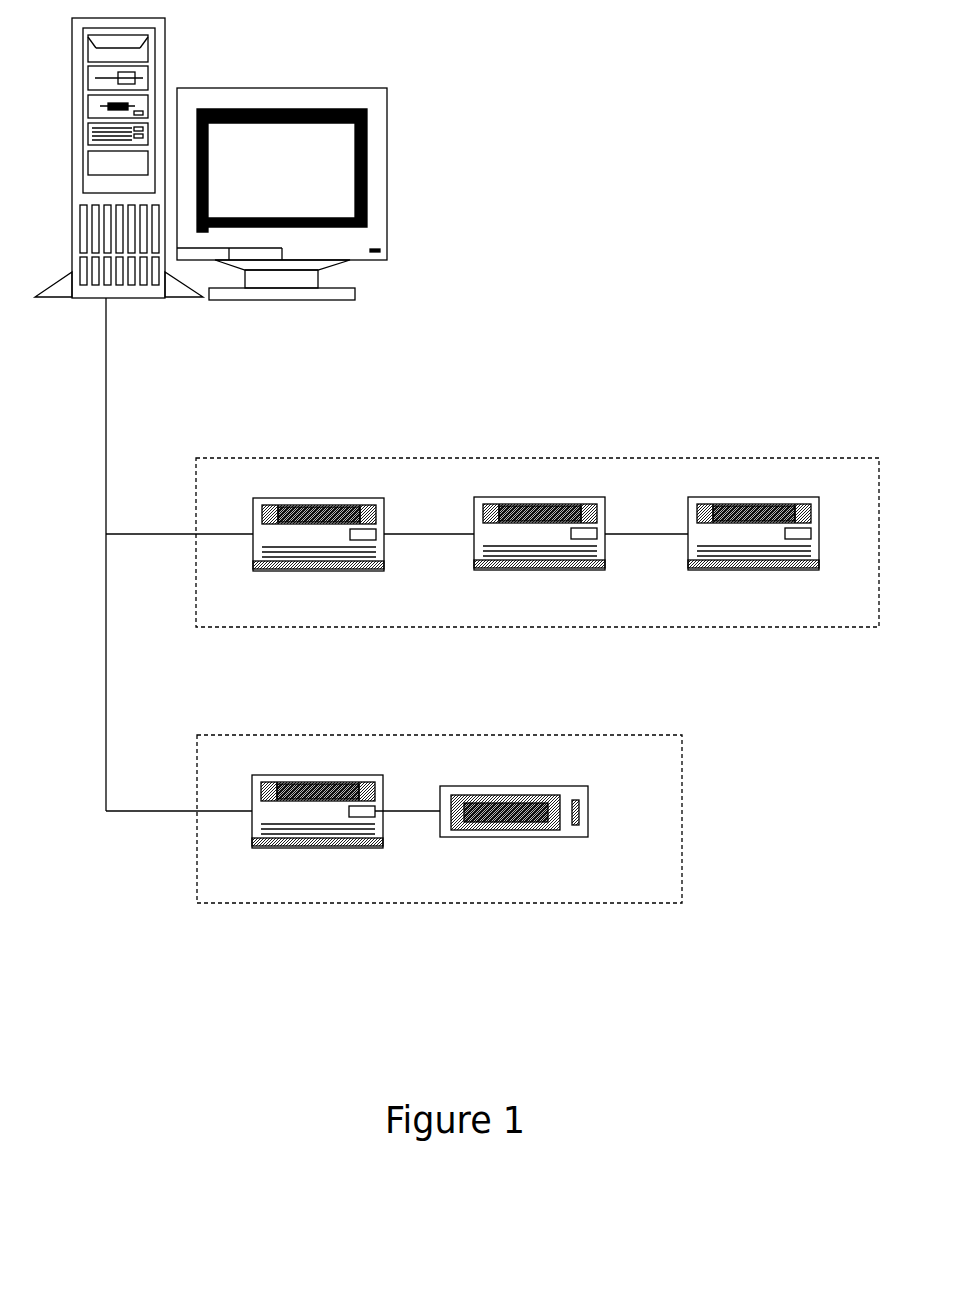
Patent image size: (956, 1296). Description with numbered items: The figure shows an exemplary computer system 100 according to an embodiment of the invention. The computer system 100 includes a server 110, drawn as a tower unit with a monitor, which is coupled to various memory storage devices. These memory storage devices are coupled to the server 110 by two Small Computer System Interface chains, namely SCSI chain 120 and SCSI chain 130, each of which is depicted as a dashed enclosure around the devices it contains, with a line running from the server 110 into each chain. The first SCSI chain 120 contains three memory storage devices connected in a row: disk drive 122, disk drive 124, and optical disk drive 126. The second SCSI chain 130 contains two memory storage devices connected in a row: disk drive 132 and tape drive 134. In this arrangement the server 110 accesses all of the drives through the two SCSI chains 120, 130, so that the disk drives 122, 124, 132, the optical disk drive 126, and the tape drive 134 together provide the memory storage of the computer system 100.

The computer system 100 is at (537, 50).
The server 110 is at (211, 187).
The SCSI chain 120 is at (537, 542).
The disk drive 122 is at (322, 550).
The disk drive 124 is at (544, 550).
The optical disk drive 126 is at (754, 550).
The SCSI chain 130 is at (439, 819).
The disk drive 132 is at (317, 826).
The tape drive 134 is at (517, 829).